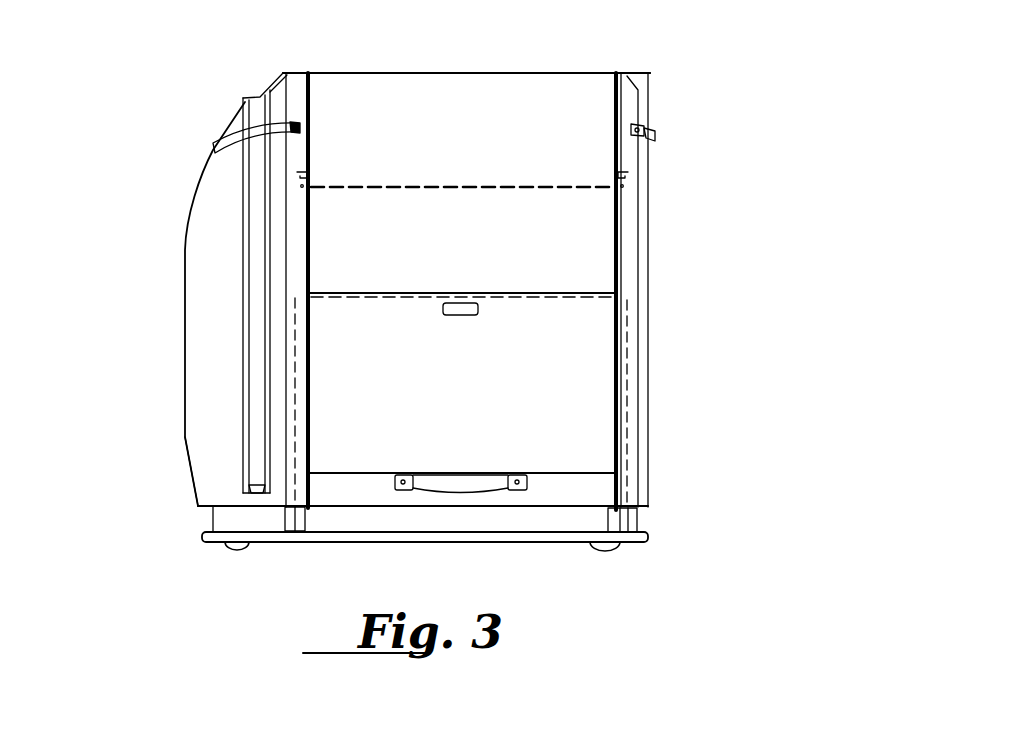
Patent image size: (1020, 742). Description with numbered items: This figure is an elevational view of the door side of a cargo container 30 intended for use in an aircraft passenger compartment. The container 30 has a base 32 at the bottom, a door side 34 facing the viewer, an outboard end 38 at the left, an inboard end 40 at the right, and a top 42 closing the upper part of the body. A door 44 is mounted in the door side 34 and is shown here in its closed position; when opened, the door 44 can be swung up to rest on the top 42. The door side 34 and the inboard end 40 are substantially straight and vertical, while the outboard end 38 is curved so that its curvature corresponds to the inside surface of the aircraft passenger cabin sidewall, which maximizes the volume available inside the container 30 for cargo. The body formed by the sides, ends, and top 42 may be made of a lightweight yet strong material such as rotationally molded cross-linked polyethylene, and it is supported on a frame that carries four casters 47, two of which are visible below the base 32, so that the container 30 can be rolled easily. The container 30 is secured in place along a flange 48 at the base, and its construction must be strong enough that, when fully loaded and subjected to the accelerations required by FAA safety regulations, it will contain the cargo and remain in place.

The container 30 is at (705, 147).
The base 32 is at (637, 518).
The door side 34 is at (217, 458).
The outboard end 38 is at (197, 217).
The inboard end 40 is at (650, 290).
The top 42 is at (477, 72).
The door 44 is at (627, 298).
The casters 47 is at (237, 546).
The flange 48 is at (647, 538).